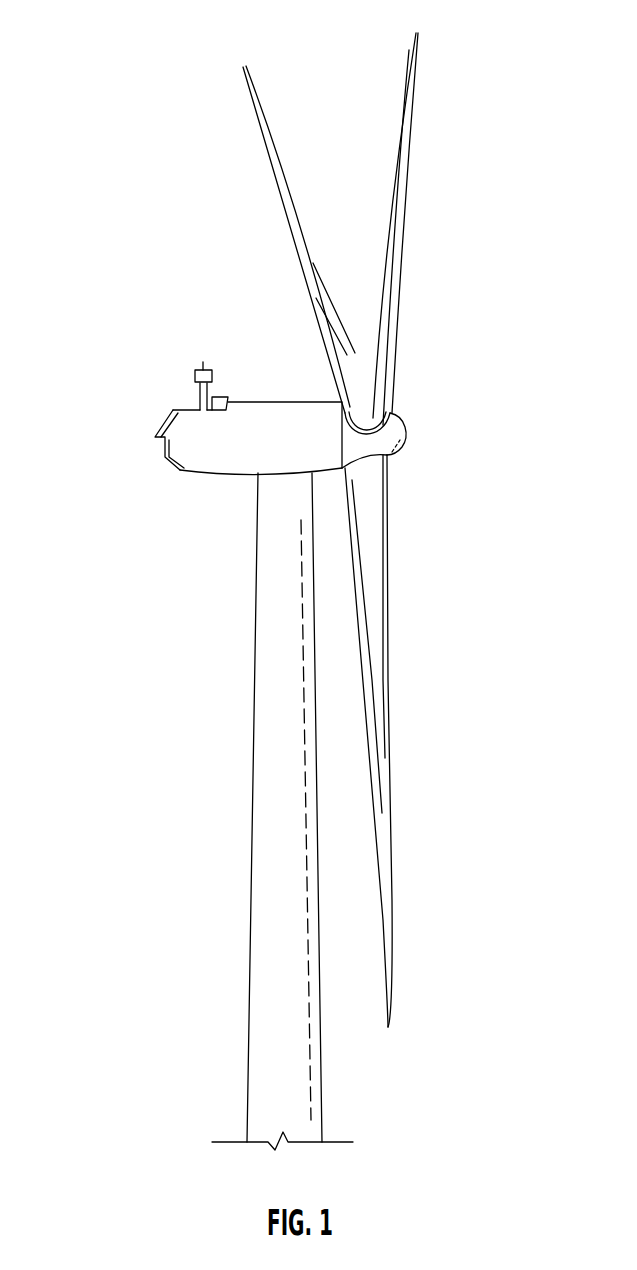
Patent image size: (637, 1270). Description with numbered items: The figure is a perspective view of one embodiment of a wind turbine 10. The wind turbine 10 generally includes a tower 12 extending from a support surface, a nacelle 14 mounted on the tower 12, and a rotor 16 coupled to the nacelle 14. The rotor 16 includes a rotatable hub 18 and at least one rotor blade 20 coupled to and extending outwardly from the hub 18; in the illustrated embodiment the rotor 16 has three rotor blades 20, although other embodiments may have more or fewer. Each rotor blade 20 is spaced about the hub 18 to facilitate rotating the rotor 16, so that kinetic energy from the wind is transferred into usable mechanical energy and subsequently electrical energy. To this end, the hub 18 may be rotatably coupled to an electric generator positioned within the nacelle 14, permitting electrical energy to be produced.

The wind turbine 10 is at (124, 169).
The tower 12 is at (252, 827).
The nacelle 14 is at (212, 489).
The rotor 16 is at (444, 414).
The rotatable hub 18 is at (405, 436).
The rotor blade 20 is at (303, 220).